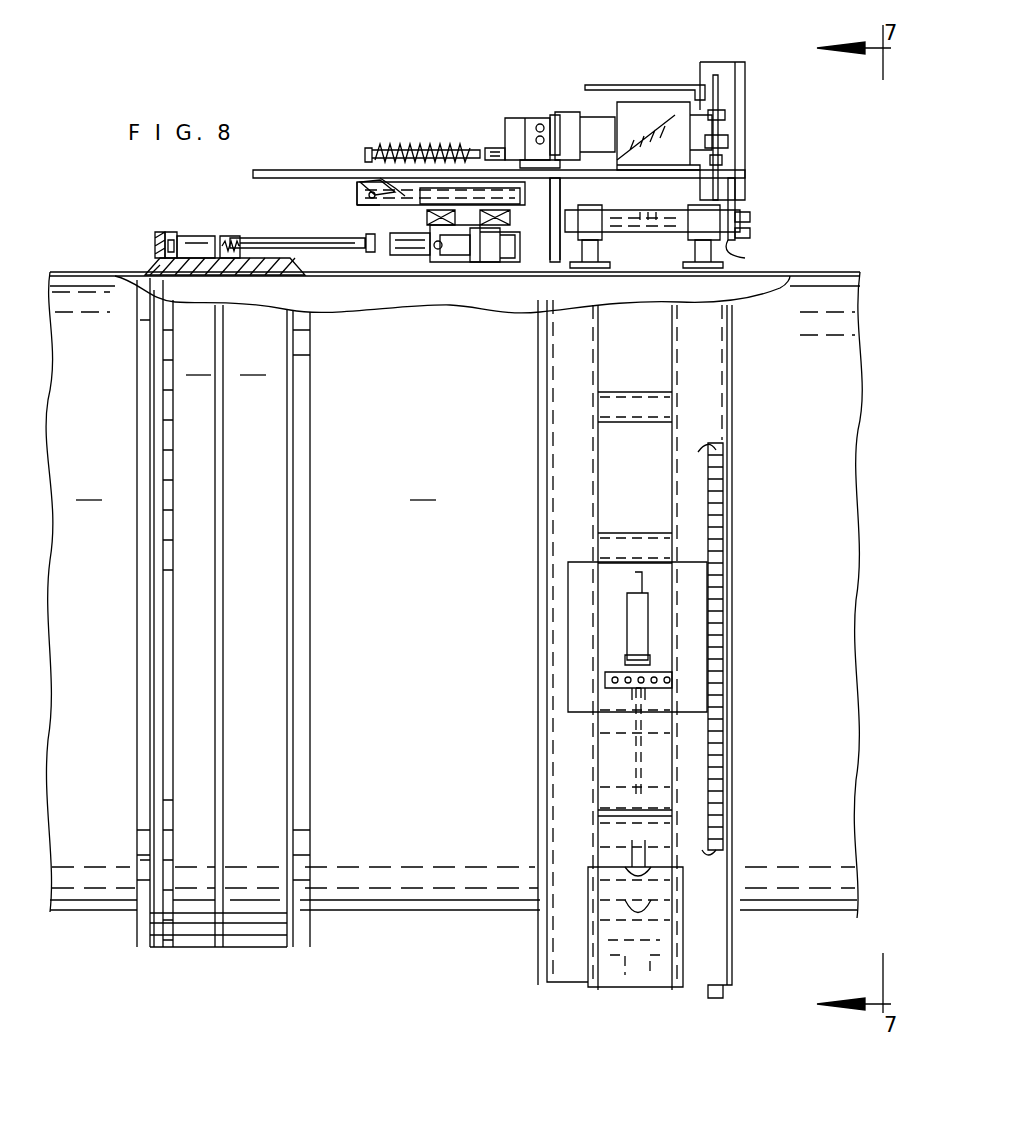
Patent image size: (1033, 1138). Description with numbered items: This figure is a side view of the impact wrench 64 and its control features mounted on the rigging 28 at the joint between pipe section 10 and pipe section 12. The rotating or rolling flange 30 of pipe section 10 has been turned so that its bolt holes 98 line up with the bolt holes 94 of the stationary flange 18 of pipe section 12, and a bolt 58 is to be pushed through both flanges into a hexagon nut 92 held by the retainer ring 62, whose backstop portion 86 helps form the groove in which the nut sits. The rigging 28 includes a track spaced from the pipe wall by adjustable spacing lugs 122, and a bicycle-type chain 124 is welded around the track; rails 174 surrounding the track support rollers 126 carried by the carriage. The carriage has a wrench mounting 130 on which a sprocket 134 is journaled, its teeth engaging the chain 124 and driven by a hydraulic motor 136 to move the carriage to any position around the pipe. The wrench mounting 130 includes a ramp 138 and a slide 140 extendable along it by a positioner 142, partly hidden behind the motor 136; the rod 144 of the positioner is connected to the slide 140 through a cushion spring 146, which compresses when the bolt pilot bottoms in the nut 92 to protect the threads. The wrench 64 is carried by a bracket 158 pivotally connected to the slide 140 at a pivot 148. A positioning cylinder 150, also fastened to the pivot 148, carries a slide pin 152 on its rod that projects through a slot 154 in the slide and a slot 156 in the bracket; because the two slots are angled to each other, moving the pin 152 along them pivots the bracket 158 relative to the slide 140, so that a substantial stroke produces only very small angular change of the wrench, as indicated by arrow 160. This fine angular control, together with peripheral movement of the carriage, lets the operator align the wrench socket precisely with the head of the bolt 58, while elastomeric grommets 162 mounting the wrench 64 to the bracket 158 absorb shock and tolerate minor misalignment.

The pipe section 10 is at (571, 649).
The pipe section 12 is at (453, 592).
The stationary flange 18 is at (180, 612).
The rigging 28 is at (562, 627).
The rotating or rolling flange 30 is at (242, 626).
The bolt 58 is at (322, 248).
The retainer ring 62 is at (148, 228).
The impact wrench 64 is at (446, 262).
The backstop portion 86 is at (155, 242).
The hexagon nut 92 is at (170, 232).
The bolt hole 94 is at (188, 236).
The bolt hole 98 is at (258, 240).
The spacing lug 122 is at (585, 268).
The chain 124 is at (720, 458).
The roller 126 is at (752, 233).
The wrench mounting 130 is at (368, 125).
The sprocket 134 is at (745, 92).
The hydraulic motor 136 is at (625, 112).
The ramp 138 is at (278, 178).
The slide 140 is at (365, 190).
The positioner 142 is at (512, 150).
The rod 144 is at (490, 150).
The cushion spring 146 is at (408, 143).
The pivot 148 is at (555, 195).
The positioning cylinder 150 is at (450, 262).
The slide pin 152 is at (380, 180).
The slot 154 is at (355, 165).
The slot 156 is at (430, 195).
The bracket 158 is at (360, 205).
The arrow 160 is at (405, 300).
The elastomeric grommet 162 is at (427, 216).
The rail 174 is at (745, 258).